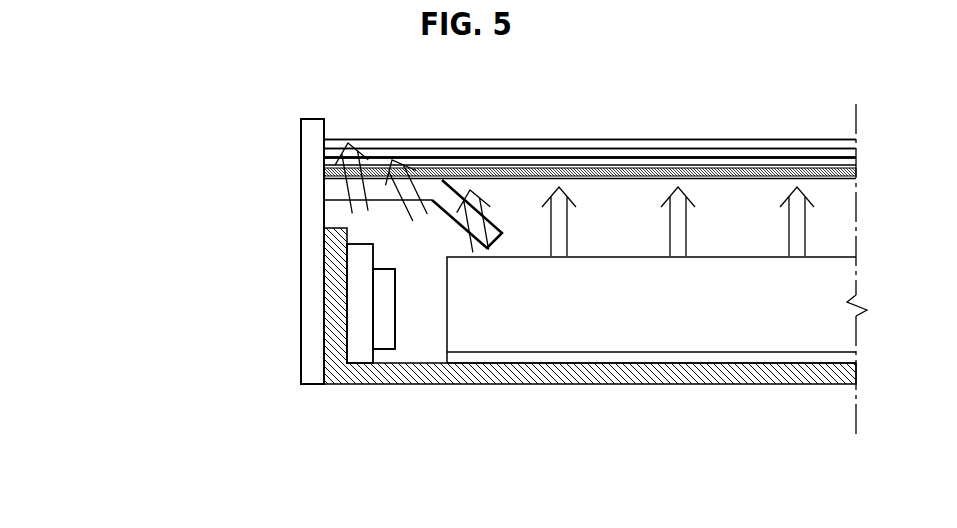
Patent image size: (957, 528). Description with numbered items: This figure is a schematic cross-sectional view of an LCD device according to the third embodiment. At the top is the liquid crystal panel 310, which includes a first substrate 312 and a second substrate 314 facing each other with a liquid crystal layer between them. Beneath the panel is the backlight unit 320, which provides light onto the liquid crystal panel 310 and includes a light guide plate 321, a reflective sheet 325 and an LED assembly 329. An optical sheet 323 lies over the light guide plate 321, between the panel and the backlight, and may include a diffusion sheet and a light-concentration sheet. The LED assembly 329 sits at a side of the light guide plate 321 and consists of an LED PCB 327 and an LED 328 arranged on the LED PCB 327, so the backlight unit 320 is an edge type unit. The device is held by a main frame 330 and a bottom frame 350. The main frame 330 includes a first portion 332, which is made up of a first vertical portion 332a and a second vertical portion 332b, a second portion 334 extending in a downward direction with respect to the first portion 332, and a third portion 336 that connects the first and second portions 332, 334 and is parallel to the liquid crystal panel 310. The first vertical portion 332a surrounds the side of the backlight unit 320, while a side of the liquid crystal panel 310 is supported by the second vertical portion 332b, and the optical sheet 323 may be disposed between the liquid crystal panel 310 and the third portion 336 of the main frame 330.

The liquid crystal panel 310 is at (605, 85).
The first substrate 312 is at (596, 155).
The second substrate 314 is at (543, 140).
The backlight unit 320 is at (387, 480).
The light guide plate 321 is at (497, 320).
The optical sheet 323 is at (650, 184).
The reflective sheet 325 is at (567, 358).
The LED PCB 327 is at (362, 328).
The LED 328 is at (385, 327).
The LED assembly 329 is at (403, 445).
The main frame 330 is at (132, 179).
The first portion 332 is at (185, 140).
The first vertical portion 332a is at (301, 218).
The second vertical portion 332b is at (301, 150).
The second portion 334 is at (395, 270).
The third portion 336 is at (388, 183).
The bottom frame 350 is at (713, 372).